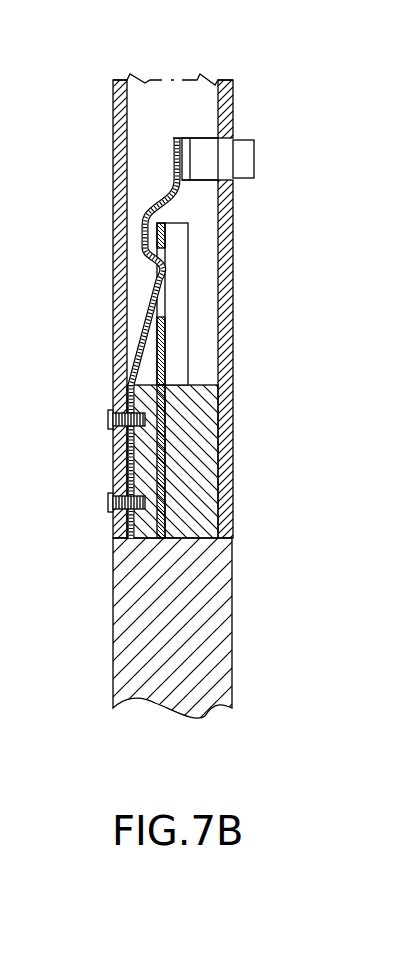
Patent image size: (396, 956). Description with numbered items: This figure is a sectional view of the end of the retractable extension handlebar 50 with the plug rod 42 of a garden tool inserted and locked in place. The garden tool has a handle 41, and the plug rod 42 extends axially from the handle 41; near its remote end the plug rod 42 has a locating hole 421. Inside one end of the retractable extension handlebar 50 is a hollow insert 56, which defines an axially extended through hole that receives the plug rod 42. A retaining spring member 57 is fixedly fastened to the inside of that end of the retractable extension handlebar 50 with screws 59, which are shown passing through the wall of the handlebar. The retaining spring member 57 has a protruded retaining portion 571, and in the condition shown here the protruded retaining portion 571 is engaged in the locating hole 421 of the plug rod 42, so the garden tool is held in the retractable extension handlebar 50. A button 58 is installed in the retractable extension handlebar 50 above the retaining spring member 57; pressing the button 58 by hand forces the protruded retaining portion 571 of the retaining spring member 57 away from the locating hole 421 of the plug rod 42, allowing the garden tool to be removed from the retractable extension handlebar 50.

The handle 41 is at (225, 628).
The plug rod 42 is at (165, 478).
The locating hole 421 is at (160, 303).
The retractable extension handlebar 50 is at (113, 162).
The hollow insert 56 is at (212, 425).
The retaining spring member 57 is at (146, 313).
The protruded retaining portion 571 is at (165, 266).
The button 58 is at (254, 160).
The screws 59 is at (108, 420).